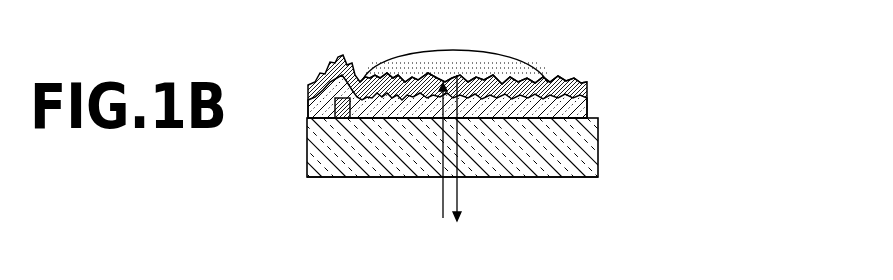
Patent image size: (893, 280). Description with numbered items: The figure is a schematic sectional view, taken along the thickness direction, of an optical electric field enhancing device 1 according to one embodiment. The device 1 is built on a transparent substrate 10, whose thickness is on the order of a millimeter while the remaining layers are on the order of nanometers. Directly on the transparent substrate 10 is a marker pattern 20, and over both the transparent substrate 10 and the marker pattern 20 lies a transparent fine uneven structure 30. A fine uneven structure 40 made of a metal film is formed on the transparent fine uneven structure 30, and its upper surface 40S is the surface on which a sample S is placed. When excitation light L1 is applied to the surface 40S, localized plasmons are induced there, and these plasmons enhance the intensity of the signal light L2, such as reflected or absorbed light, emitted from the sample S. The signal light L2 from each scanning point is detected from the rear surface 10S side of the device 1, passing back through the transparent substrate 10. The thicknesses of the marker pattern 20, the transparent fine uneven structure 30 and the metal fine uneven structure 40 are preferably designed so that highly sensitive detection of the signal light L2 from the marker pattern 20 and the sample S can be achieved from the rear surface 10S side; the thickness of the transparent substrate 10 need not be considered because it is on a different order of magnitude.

The optical electric field enhancing device 1 is at (613, 52).
The transparent substrate 10 is at (593, 147).
The rear surface 10S is at (566, 178).
The marker pattern 20 is at (308, 100).
The transparent fine uneven structure 30 is at (457, 75).
The fine uneven structure 40 is at (496, 81).
The surface 40S is at (558, 76).
The sample S is at (397, 62).
The excitation light L1 is at (428, 150).
The signal light L2 is at (471, 148).